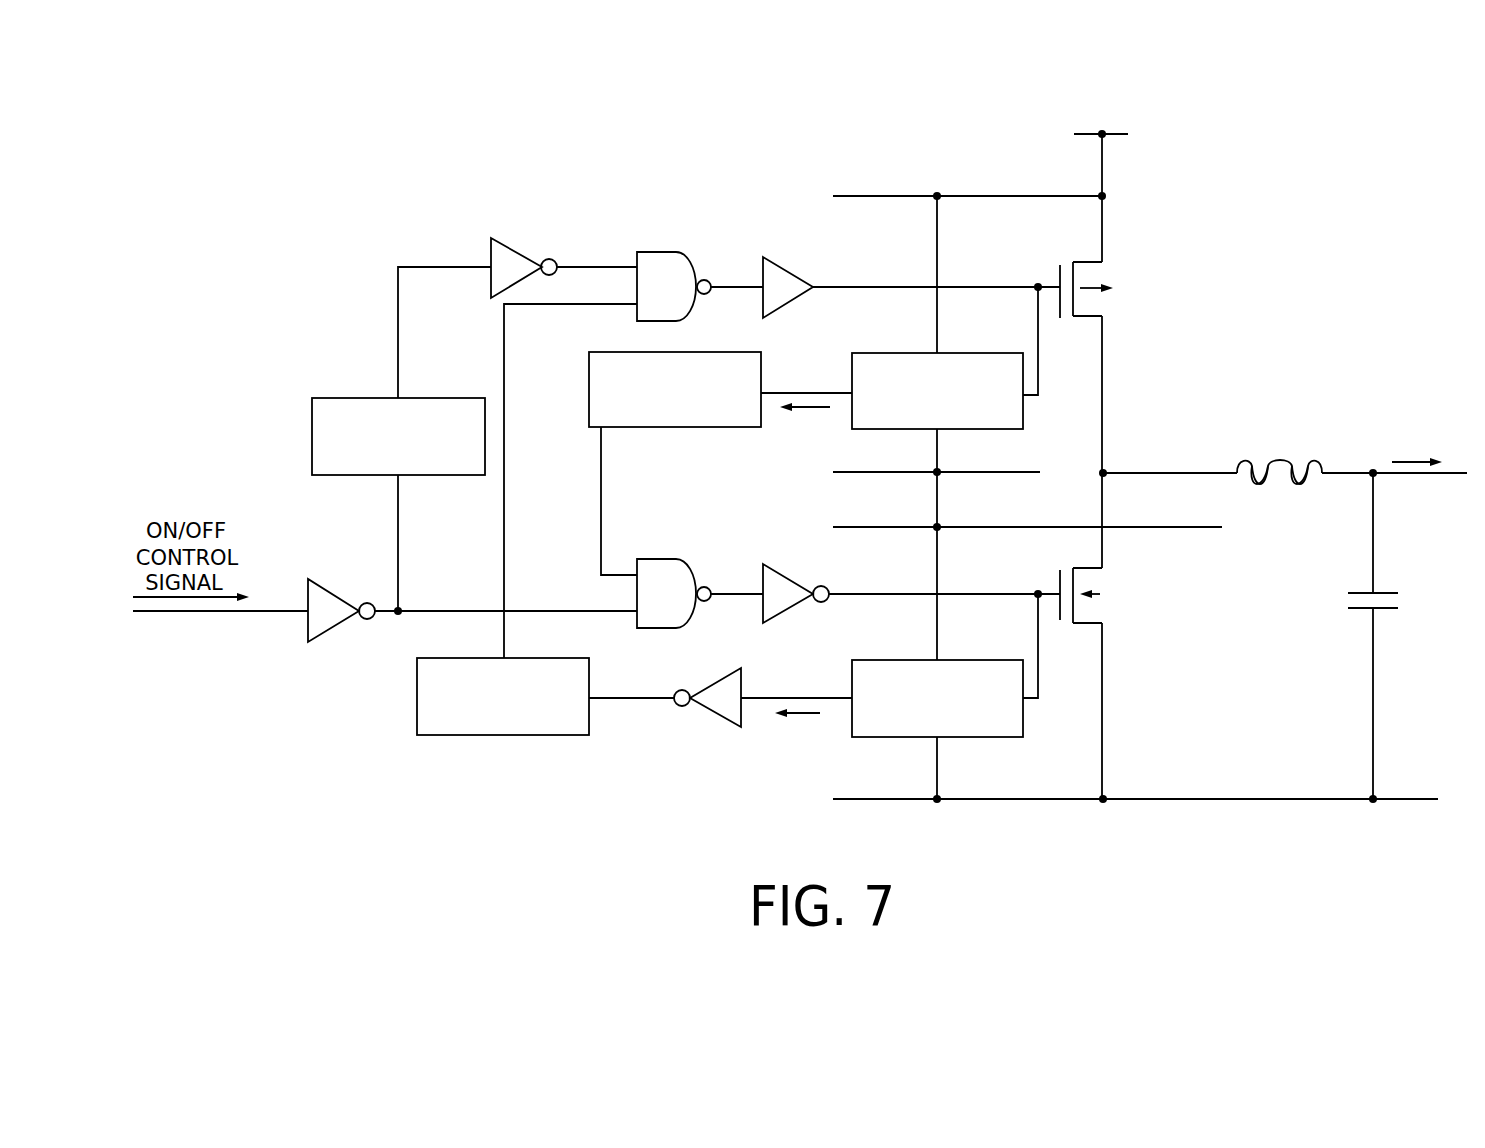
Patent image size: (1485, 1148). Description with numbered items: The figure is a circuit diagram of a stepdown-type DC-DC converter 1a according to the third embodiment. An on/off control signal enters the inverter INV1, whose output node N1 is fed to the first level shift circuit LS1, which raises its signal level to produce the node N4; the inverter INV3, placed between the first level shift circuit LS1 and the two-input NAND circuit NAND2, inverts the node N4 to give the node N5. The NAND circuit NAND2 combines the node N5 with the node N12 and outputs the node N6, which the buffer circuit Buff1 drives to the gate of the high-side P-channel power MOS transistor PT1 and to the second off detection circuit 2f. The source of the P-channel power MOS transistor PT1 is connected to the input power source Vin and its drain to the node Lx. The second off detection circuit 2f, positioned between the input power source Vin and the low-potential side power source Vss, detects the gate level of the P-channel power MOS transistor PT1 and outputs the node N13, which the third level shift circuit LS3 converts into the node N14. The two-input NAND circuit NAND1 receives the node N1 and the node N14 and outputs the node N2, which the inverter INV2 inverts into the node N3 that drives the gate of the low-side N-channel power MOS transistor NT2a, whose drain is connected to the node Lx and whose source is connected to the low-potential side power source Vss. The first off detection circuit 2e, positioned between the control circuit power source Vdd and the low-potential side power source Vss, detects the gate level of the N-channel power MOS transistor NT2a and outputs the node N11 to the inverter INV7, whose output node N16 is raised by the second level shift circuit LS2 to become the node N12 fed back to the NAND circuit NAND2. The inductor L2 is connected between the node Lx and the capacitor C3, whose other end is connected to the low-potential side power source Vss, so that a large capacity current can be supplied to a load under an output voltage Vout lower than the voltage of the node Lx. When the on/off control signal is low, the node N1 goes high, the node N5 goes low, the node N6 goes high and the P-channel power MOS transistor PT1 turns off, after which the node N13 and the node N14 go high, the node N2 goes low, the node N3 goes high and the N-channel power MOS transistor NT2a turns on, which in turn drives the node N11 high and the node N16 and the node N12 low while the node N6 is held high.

The stepdown-type DC-DC converter 1a is at (1316, 226).
The inverter INV1 is at (318, 643).
The inverter INV2 is at (793, 564).
The inverter INV3 is at (518, 247).
The inverter INV7 is at (707, 728).
The 2-input NAND circuit NAND1 is at (678, 559).
The 2-input NAND circuit NAND2 is at (665, 252).
The buffer circuit Buff1 is at (784, 257).
The first level shift circuit LS1 is at (332, 396).
The second level shift circuit LS2 is at (503, 737).
The third level shift circuit LS3 is at (589, 388).
The first off detection circuit 2e is at (990, 660).
The second off detection circuit 2f is at (990, 353).
The P-channel power MOS transistor PT1 is at (1057, 268).
The N-channel power MOS transistor NT2a is at (1100, 611).
The inductor L2 is at (1291, 460).
The capacitor C3 is at (1398, 598).
The input power source Vin is at (1120, 132).
The output voltage Vout is at (1394, 455).
The low-potential side power source Vss is at (1020, 472).
The control circuit power source Vdd is at (1068, 527).
The node Lx is at (1168, 462).
The node N1 is at (506, 545).
The node N2 is at (737, 581).
The node N3 is at (944, 633).
The node N4 is at (444, 332).
The node N5 is at (597, 255).
The node N6 is at (737, 273).
The node N11 is at (796, 694).
The node N12 is at (570, 481).
The node N13 is at (806, 389).
The node N14 is at (626, 501).
The node N16 is at (631, 684).